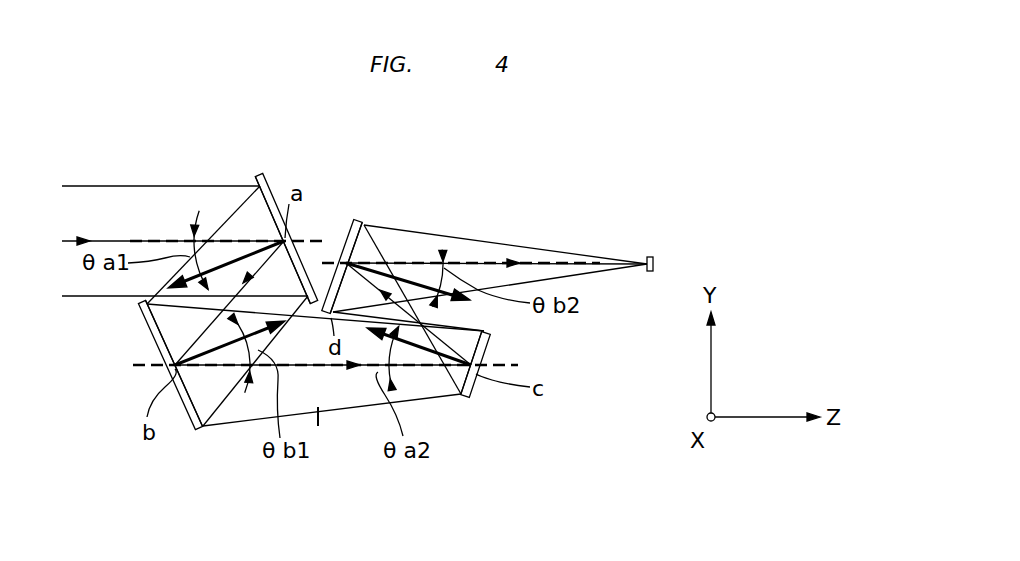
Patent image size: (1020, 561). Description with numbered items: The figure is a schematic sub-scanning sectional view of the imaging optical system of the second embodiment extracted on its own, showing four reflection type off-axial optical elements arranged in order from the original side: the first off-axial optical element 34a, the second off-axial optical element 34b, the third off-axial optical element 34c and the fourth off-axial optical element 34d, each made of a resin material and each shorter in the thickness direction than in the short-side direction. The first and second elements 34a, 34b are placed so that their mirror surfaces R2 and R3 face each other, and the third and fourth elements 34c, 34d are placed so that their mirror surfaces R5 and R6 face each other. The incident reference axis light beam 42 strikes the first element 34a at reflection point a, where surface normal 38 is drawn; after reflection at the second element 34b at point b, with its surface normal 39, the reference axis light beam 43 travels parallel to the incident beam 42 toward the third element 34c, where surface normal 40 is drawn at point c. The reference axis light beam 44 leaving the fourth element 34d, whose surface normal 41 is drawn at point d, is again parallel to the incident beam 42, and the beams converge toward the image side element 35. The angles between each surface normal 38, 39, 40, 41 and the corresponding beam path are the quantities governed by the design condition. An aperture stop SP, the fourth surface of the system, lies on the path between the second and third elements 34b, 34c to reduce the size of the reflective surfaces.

The first reflection type off-axial optical element 34a is at (260, 177).
The second reflection type off-axial optical element 34b is at (192, 425).
The third reflection type off-axial optical element 34c is at (462, 398).
The fourth reflection type off-axial optical element 34d is at (362, 221).
The image plane / display element (R5) 35 is at (648, 256).
The surface normal 38 is at (229, 263).
The surface normal 39 is at (245, 340).
The surface normal 40 is at (472, 390).
The surface normal 41 is at (390, 276).
The incident reference axis light beam 42 is at (308, 240).
The reference axis light beam 43 is at (138, 366).
The reference axis light beam 44 is at (328, 263).
The mirror surface R2 is at (257, 203).
The mirror surface R3 is at (203, 428).
The mirror surface R5 is at (488, 345).
The mirror surface R6 is at (357, 250).
The aperture stop SP is at (320, 413).